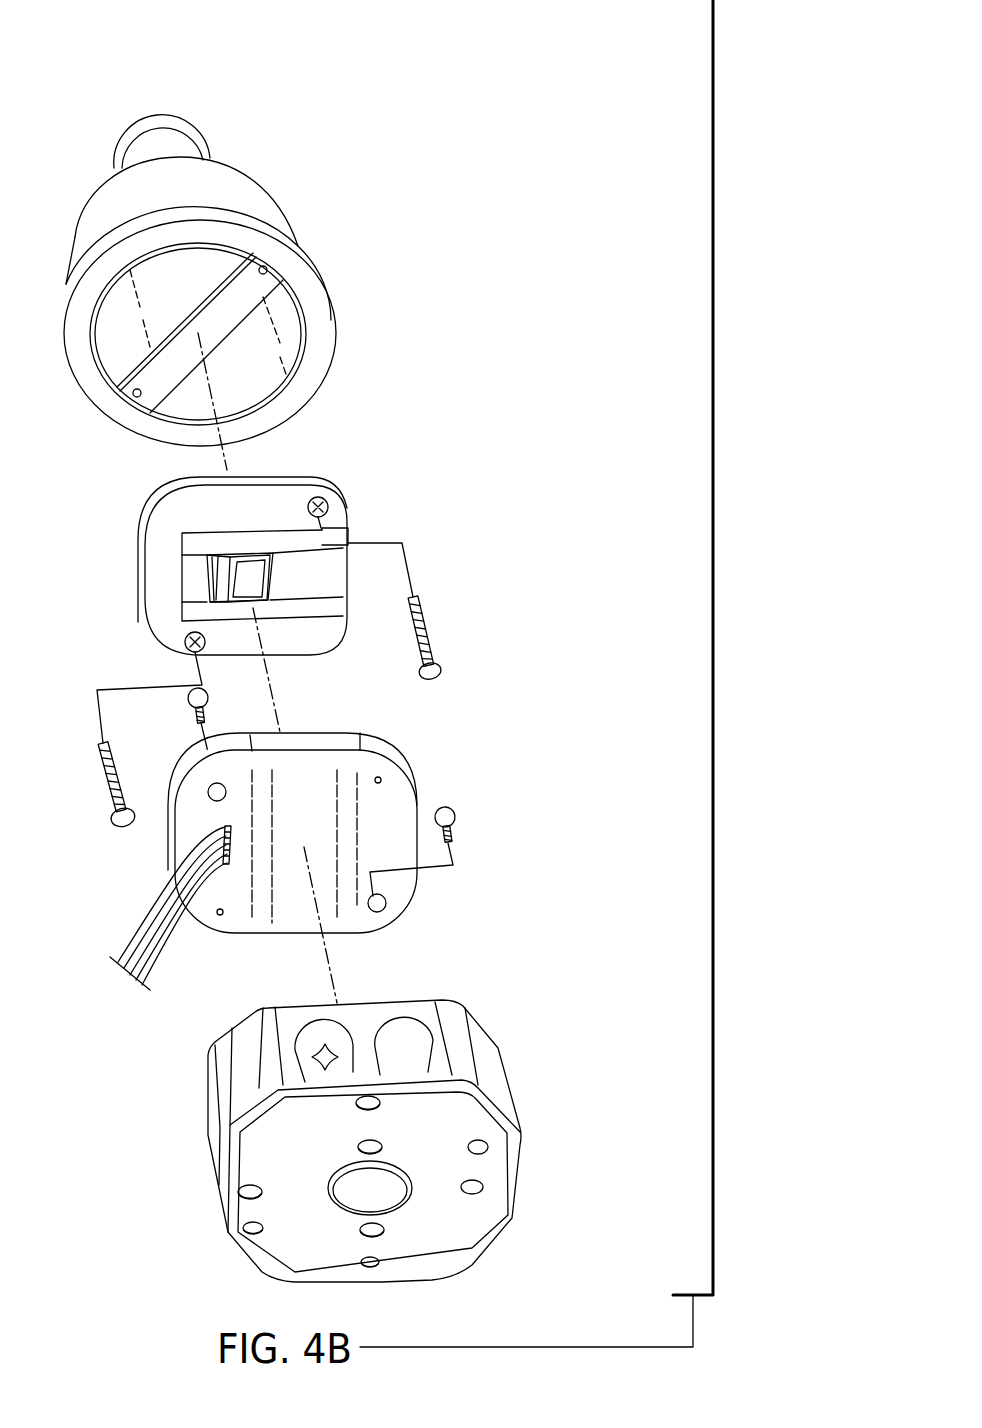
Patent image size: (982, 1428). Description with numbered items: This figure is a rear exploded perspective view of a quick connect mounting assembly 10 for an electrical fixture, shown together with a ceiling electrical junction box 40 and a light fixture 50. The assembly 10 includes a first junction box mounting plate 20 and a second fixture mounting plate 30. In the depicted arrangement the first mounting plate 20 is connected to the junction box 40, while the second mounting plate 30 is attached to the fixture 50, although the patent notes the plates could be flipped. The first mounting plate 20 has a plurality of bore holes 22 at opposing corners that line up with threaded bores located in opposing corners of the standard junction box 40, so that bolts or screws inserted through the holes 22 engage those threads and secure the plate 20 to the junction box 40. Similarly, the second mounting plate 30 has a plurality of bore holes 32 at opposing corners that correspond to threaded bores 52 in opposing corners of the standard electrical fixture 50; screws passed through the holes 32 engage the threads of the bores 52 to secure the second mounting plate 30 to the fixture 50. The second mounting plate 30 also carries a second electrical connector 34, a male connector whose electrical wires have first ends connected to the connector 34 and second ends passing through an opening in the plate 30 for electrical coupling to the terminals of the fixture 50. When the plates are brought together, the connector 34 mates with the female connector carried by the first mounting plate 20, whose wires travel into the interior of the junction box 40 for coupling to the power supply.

The quick connect mounting assembly 10 is at (500, 66).
The first junction box mounting plate 20 is at (319, 861).
The bore holes 22 is at (208, 790).
The second fixture mounting plate 30 is at (279, 647).
The bore holes 32 is at (326, 510).
The second electrical connector 34 is at (252, 580).
The ceiling electrical junction box 40 is at (532, 1101).
The electrical fixture 50 is at (252, 280).
The threaded bores 52 is at (270, 275).